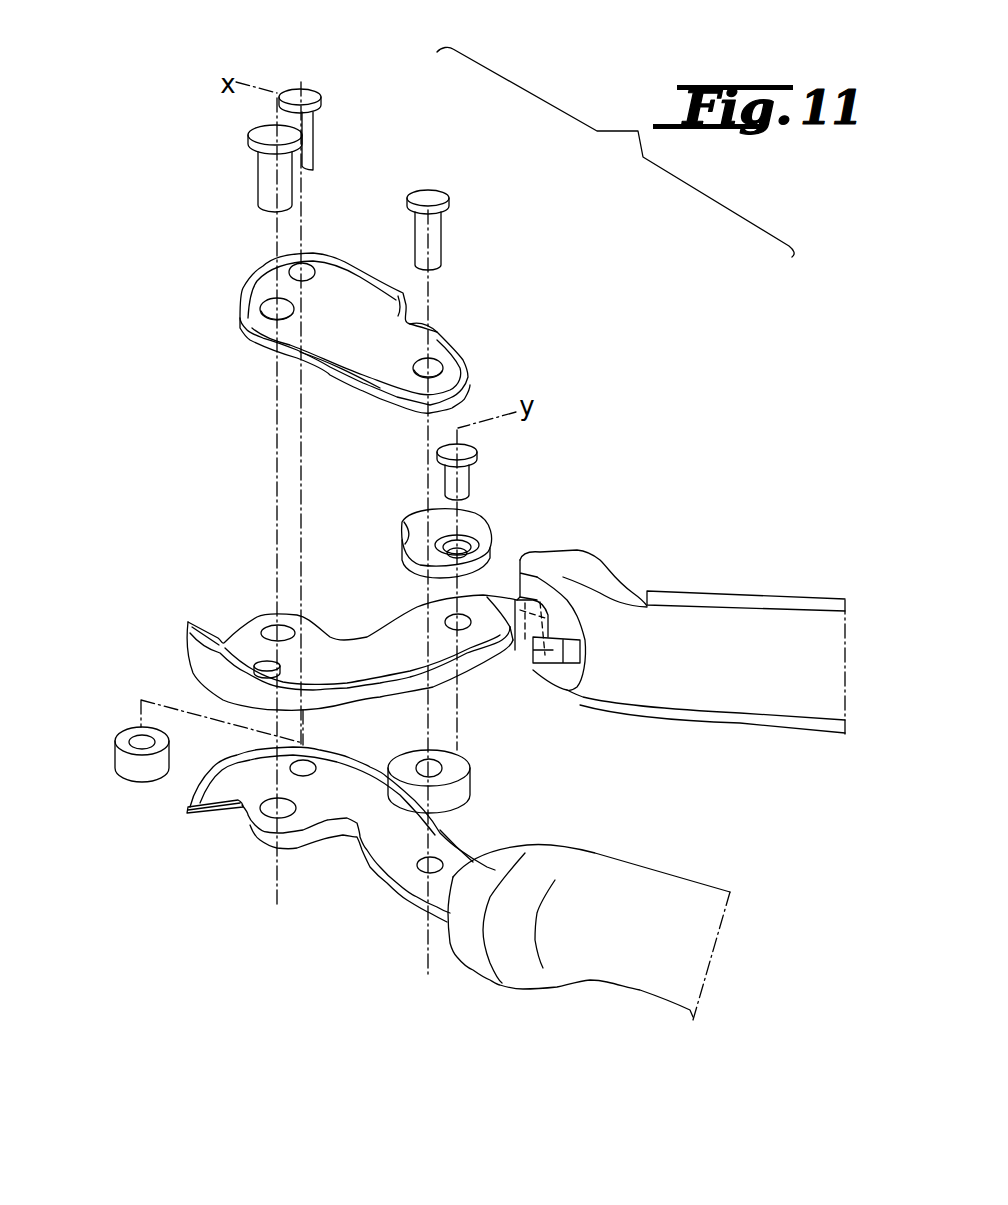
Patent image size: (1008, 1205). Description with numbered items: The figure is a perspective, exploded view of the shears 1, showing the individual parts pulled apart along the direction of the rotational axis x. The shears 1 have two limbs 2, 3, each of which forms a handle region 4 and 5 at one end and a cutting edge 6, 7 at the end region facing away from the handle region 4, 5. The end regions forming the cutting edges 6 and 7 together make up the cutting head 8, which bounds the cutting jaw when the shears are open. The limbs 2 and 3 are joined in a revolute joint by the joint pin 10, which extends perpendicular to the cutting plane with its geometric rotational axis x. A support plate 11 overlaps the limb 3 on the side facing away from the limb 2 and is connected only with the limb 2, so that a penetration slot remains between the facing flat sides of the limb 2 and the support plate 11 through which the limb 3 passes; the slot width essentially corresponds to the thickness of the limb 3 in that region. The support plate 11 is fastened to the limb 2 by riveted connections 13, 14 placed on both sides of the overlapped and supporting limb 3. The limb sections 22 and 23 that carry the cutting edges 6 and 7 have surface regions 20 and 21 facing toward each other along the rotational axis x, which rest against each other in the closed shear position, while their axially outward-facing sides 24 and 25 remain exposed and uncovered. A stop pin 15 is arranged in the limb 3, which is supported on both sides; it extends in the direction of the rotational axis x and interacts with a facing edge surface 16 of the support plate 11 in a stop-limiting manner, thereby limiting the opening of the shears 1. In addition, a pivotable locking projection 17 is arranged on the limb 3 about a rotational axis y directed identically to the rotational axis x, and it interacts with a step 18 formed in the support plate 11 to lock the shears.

The shears 1 is at (170, 360).
The limb 2 is at (592, 1002).
The limb 3 is at (727, 578).
The handle region 4 is at (488, 627).
The handle region 5 is at (430, 887).
The cutting edge 6 is at (220, 633).
The cutting edge 7 is at (220, 797).
The cutting head 8 is at (163, 650).
The joint pin 10 is at (248, 138).
The support plate 11 is at (333, 287).
The connection 13 is at (428, 190).
The connection 14 is at (300, 95).
The stop pin 15 is at (267, 661).
The edge surface 16 is at (347, 362).
The locking projection 17 is at (402, 547).
The step 18 is at (412, 312).
The surface region 20 is at (187, 623).
The surface region 21 is at (223, 797).
The limb section 22 is at (233, 660).
The limb section 23 is at (228, 773).
The side 24 is at (203, 652).
The side 25 is at (182, 810).